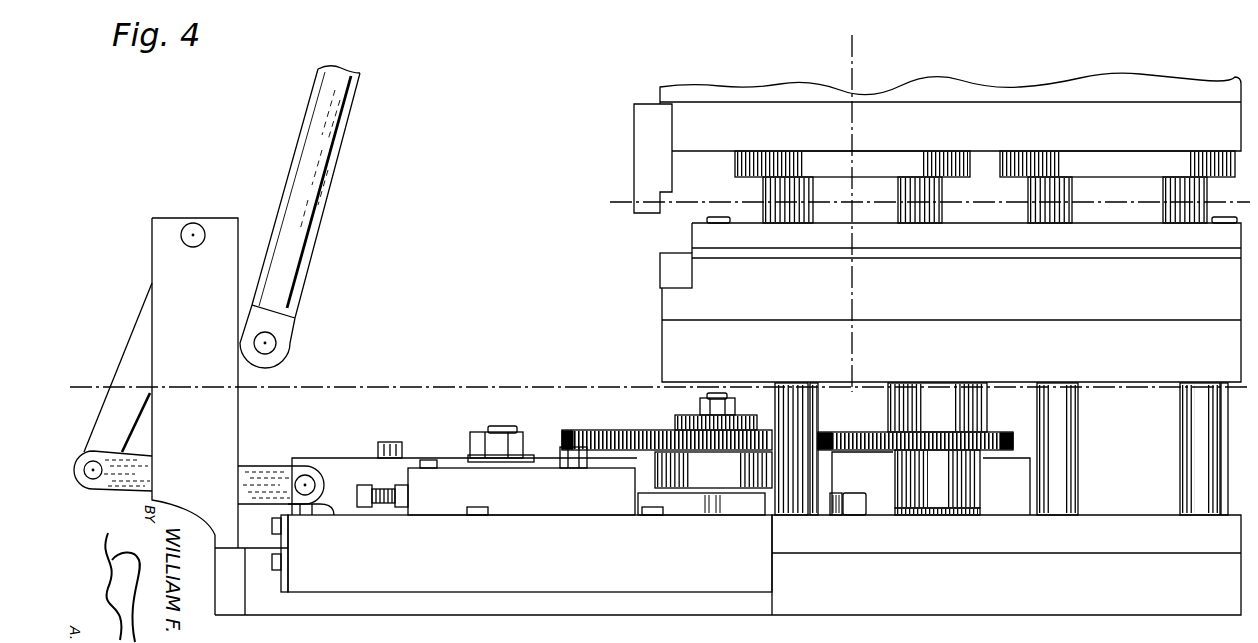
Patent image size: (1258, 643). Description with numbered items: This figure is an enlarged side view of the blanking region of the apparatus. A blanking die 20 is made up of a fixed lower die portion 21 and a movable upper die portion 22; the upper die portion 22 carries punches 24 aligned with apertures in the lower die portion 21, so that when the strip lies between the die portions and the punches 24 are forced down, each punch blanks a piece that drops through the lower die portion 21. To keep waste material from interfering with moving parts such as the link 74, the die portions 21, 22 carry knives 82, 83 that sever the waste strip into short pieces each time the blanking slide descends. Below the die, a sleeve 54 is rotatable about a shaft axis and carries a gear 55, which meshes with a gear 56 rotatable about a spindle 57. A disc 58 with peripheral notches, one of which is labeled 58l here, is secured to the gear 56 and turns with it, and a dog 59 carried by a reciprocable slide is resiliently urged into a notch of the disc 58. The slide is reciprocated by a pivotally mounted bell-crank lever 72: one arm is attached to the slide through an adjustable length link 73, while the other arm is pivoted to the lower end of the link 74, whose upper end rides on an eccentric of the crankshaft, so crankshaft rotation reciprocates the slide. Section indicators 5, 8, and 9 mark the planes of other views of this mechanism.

The section line 5- 5 is at (88, 360).
The section line 8- 8 is at (875, 53).
The section line 9- 9 is at (603, 220).
The blanking die 20 is at (608, 248).
The lower die portion 21 is at (673, 300).
The upper die portion 22 is at (690, 112).
The punches 24 is at (888, 212).
The sleeve 54 is at (942, 392).
The gear 55 is at (1013, 440).
The gear 56 is at (606, 434).
The spindle 57 is at (710, 398).
The disc 58 is at (833, 502).
The bearing block 58l is at (848, 503).
The dog 59 is at (733, 503).
The bell-crank lever 72 is at (130, 322).
The adjustable length link 73 is at (267, 477).
The link 74 is at (330, 207).
The knife 82 is at (667, 268).
The knife 83 is at (648, 155).